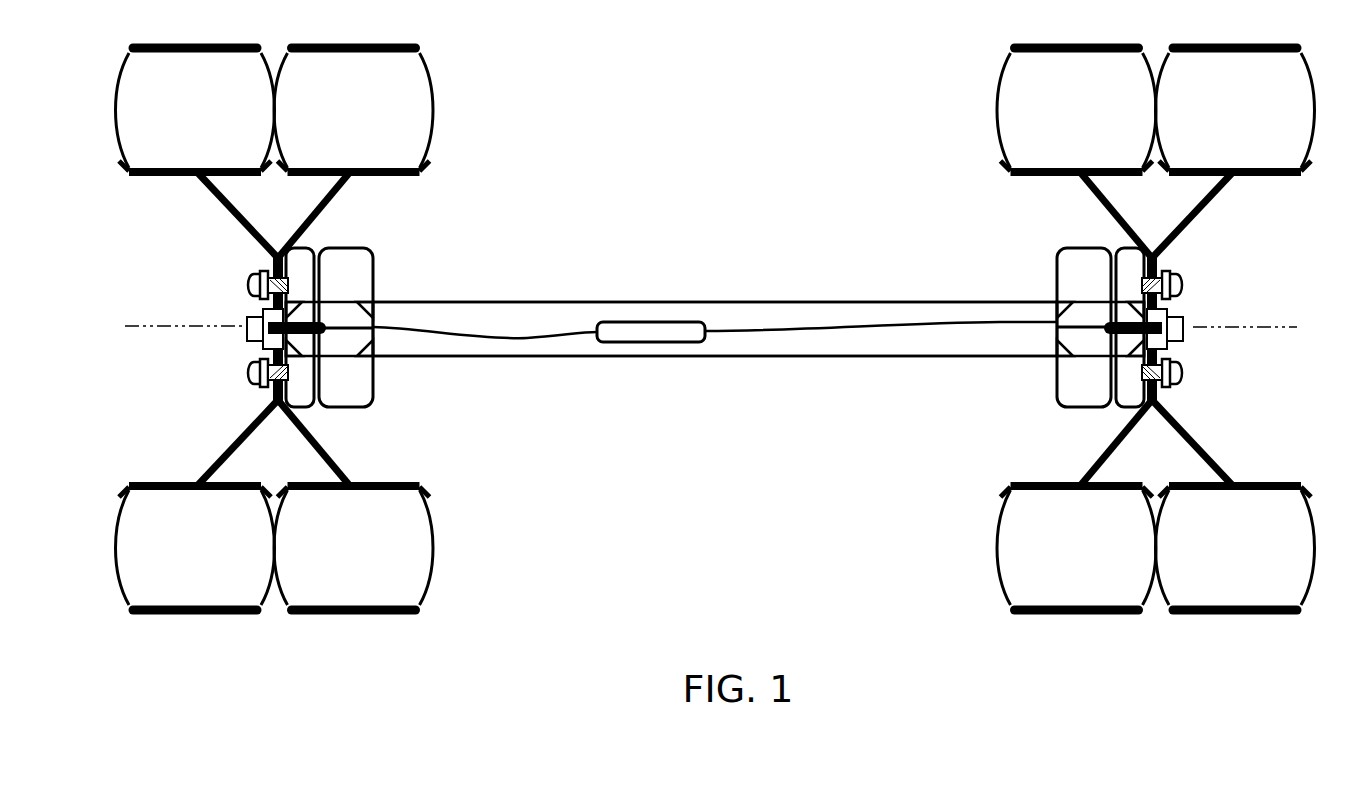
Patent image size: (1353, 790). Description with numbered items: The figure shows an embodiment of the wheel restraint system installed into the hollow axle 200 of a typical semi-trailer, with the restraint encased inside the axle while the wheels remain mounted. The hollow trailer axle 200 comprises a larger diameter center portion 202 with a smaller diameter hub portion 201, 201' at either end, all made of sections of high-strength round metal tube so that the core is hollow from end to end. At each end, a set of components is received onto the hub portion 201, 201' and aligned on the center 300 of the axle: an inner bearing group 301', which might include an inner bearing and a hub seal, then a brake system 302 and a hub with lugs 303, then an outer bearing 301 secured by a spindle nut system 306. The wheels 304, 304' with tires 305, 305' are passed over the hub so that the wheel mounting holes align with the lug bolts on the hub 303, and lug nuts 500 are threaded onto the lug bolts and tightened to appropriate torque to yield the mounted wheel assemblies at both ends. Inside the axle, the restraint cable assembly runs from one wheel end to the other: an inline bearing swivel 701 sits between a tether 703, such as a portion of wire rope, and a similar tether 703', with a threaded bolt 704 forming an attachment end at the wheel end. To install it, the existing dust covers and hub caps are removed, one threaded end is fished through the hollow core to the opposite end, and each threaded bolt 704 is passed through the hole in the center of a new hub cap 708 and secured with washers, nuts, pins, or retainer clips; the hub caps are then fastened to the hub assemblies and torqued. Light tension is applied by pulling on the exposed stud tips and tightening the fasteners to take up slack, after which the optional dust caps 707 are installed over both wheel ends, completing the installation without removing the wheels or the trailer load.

The hollow trailer axle 200 is at (580, 358).
The hub portion 201 is at (372, 300).
The hub portion 201' is at (1053, 301).
The center portion 202 is at (505, 302).
The center of the axle 300 is at (711, 325).
The outer bearing 301 is at (715, 369).
The inner bearing group 301' is at (715, 351).
The brake system 302 is at (342, 265).
The hub with lugs 303 is at (298, 247).
The wheel 304 is at (710, 329).
The wheel 304' is at (714, 329).
The tire 305 is at (715, 329).
The tire 305' is at (715, 329).
The spindle nut system 306 is at (286, 352).
The lug nuts 500 is at (258, 276).
The inline bearing swivel 701 is at (652, 325).
The tether 703 is at (517, 302).
The tether 703' is at (881, 295).
The threaded bolt 704 is at (250, 314).
The dust cap 707 is at (256, 358).
The hub cap 708 is at (252, 342).